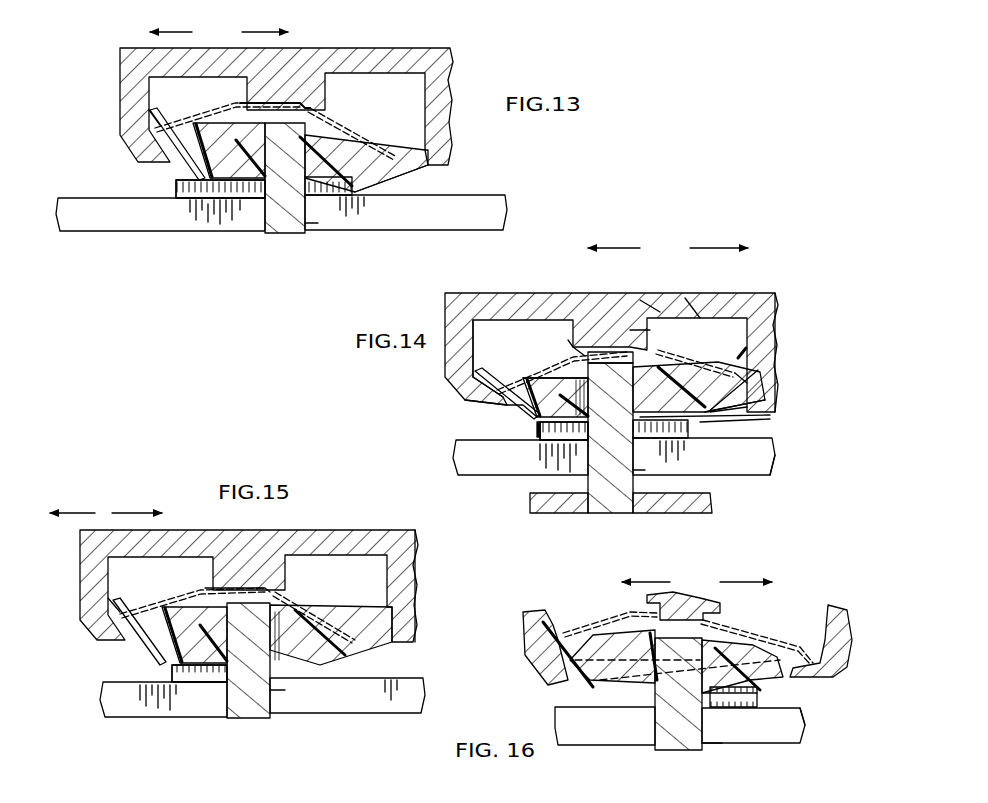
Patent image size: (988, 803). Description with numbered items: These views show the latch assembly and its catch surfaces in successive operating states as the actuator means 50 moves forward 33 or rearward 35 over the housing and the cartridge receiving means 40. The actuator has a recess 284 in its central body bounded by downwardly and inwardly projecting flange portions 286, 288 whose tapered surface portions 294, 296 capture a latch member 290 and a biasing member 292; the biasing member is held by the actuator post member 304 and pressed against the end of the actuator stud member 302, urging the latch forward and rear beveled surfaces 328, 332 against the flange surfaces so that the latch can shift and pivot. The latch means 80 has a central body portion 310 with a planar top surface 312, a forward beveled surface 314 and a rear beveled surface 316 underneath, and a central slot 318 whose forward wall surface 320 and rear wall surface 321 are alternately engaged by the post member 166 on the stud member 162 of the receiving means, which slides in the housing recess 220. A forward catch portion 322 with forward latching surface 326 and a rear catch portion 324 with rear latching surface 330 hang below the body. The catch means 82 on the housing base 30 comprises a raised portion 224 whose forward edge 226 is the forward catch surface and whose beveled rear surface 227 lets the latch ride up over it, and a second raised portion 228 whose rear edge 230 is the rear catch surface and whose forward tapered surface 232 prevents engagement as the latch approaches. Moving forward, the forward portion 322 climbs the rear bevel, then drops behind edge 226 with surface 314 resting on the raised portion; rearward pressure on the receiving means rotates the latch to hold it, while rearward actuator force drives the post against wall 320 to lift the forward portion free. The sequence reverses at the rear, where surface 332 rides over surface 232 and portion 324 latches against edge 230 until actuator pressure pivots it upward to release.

In FIG. 13, the base plate 30 is at (197, 236).
In FIG. 14, the base plate 30 is at (470, 441).
In FIG. 15, the base plate 30 is at (158, 720).
In FIG. 13, the forward direction 33 is at (178, 32).
In FIG. 14, the forward direction 33 is at (625, 248).
In FIG. 15, the forward direction 33 is at (80, 512).
In FIG. 16, the forward direction 33 is at (658, 582).
In FIG. 13, the rearward direction 35 is at (248, 32).
In FIG. 14, the rearward direction 35 is at (705, 248).
In FIG. 15, the rearward direction 35 is at (122, 513).
In FIG. 16, the rearward direction 35 is at (725, 582).
In FIG. 13, the receiving means 40 is at (290, 240).
In FIG. 14, the receiving means 40 is at (578, 515).
In FIG. 15, the receiving means 40 is at (247, 727).
In FIG. 16, the receiving means 40 is at (683, 753).
In FIG. 13, the actuator means 50 is at (378, 48).
In FIG. 14, the actuator means 50 is at (533, 292).
In FIG. 15, the actuator means 50 is at (340, 530).
In FIG. 16, the actuator means 50 is at (687, 638).
In FIG. 14, the latch means 80 is at (812, 335).
In FIG. 15, the latch means 80 is at (440, 550).
In FIG. 13, the catch means 82 is at (173, 187).
In FIG. 15, the catch means 82 is at (168, 673).
In FIG. 14, the stud member 162 is at (612, 452).
In FIG. 16, the stud member 162 is at (657, 745).
In FIG. 13, the post member 166 is at (307, 226).
In FIG. 14, the post member 166 is at (655, 475).
In FIG. 15, the post member 166 is at (265, 695).
In FIG. 14, the recess 220 is at (698, 475).
In FIG. 13, the raised portion 224 is at (230, 195).
In FIG. 14, the raised portion 224 is at (572, 444).
In FIG. 15, the raised portion 224 is at (190, 675).
In FIG. 13, the forward edge 226 is at (200, 176).
In FIG. 15, the forward edge 226 is at (165, 663).
In FIG. 13, the beveled rear surface 227 is at (345, 224).
In FIG. 14, the second raised portion 228 is at (770, 474).
In FIG. 16, the second raised portion 228 is at (740, 692).
In FIG. 16, the rear edge 230 is at (767, 707).
In FIG. 16, the forward tapered surface 232 is at (717, 737).
In FIG. 14, the recess 284 is at (484, 322).
In FIG. 14, the flange portion 286 is at (472, 382).
In FIG. 14, the flange portion 288 is at (772, 395).
In FIG. 13, the latch member 290 is at (372, 134).
In FIG. 14, the latch member 290 is at (780, 372).
In FIG. 15, the latch member 290 is at (300, 612).
In FIG. 13, the biasing member 292 is at (326, 110).
In FIG. 14, the biasing member 292 is at (760, 308).
In FIG. 15, the biasing member 292 is at (330, 620).
In FIG. 14, the surface portion 294 is at (496, 361).
In FIG. 14, the surface portion 296 is at (770, 330).
In FIG. 14, the actuator stud member 302 is at (652, 331).
In FIG. 14, the actuator post member 304 is at (577, 342).
In FIG. 14, the central body portion 310 is at (505, 398).
In FIG. 14, the top surface 312 is at (692, 358).
In FIG. 14, the beveled surface 314 is at (550, 442).
In FIG. 14, the beveled surface 316 is at (627, 356).
In FIG. 14, the central slot 318 is at (643, 303).
In FIG. 14, the forward wall surface 320 is at (535, 378).
In FIG. 15, the forward wall surface 320 is at (222, 665).
In FIG. 16, the forward wall surface 320 is at (603, 715).
In FIG. 14, the rear wall surface 321 is at (692, 300).
In FIG. 13, the forward catch portion 322 is at (210, 165).
In FIG. 14, the forward catch portion 322 is at (528, 428).
In FIG. 16, the forward catch portion 322 is at (648, 678).
In FIG. 13, the rear catch portion 324 is at (370, 191).
In FIG. 14, the rear catch portion 324 is at (735, 415).
In FIG. 16, the rear catch portion 324 is at (760, 694).
In FIG. 14, the forward latching surface 326 is at (538, 446).
In FIG. 14, the forward beveled surface 328 is at (522, 420).
In FIG. 14, the rear latching surface 330 is at (705, 428).
In FIG. 14, the rear beveled surface 332 is at (760, 405).
In FIG. 16, the rear beveled surface 332 is at (790, 681).